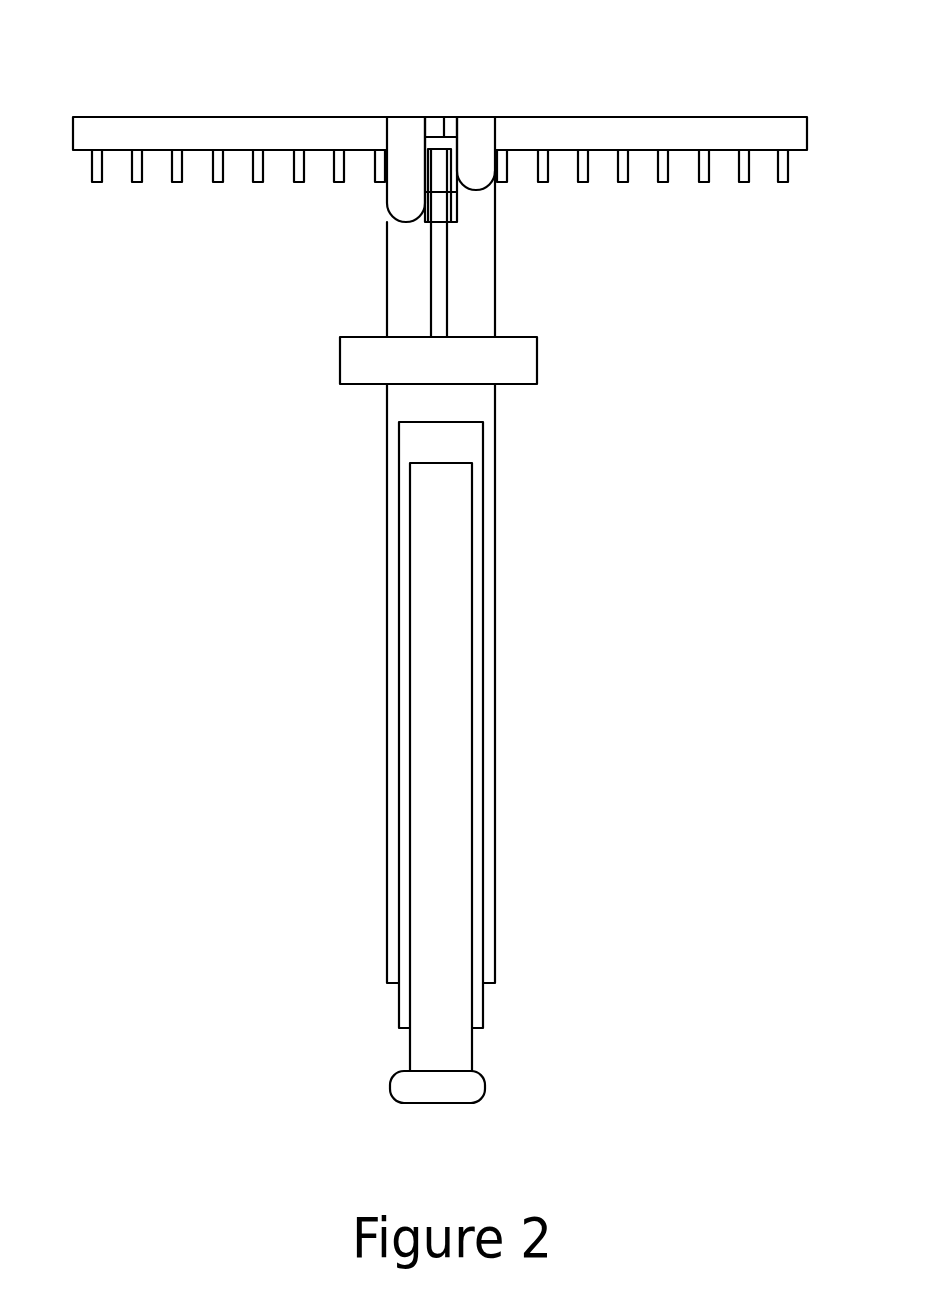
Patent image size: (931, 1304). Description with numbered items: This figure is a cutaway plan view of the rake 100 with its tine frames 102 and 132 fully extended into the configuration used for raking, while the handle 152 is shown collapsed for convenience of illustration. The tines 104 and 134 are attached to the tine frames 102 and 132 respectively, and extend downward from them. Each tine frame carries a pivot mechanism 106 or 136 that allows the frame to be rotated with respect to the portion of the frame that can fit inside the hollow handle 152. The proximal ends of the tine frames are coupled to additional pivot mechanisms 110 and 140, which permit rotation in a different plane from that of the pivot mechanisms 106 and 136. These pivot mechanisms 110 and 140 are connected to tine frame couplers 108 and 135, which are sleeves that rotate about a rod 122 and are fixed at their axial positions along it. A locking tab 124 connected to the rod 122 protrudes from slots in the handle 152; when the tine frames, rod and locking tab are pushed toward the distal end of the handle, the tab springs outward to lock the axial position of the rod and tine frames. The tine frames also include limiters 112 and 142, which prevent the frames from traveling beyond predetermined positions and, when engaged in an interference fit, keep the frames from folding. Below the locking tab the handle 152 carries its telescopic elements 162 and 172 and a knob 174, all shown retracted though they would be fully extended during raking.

The rake 100 is at (128, 314).
The tine frame 102 is at (255, 117).
The tines 104 is at (253, 182).
The pivot mechanism 106 is at (387, 130).
The tine frame coupler 108 is at (426, 222).
The pivot mechanism 110 is at (387, 214).
The limiter 112 is at (433, 117).
The rod 122 is at (450, 288).
The locking tab 124 is at (537, 353).
The tine frame 132 is at (698, 117).
The tines 134 is at (660, 182).
The tine frame coupler 135 is at (457, 193).
The pivot mechanism 136 is at (494, 138).
The pivot mechanism 140 is at (493, 184).
The limiter 142 is at (452, 117).
The handle 152 is at (495, 313).
The telescopic element 162 is at (482, 1020).
The telescopic element 172 is at (472, 1055).
The knob 174 is at (483, 1077).